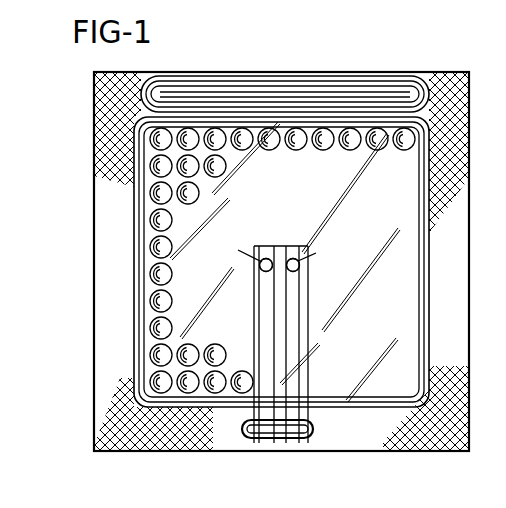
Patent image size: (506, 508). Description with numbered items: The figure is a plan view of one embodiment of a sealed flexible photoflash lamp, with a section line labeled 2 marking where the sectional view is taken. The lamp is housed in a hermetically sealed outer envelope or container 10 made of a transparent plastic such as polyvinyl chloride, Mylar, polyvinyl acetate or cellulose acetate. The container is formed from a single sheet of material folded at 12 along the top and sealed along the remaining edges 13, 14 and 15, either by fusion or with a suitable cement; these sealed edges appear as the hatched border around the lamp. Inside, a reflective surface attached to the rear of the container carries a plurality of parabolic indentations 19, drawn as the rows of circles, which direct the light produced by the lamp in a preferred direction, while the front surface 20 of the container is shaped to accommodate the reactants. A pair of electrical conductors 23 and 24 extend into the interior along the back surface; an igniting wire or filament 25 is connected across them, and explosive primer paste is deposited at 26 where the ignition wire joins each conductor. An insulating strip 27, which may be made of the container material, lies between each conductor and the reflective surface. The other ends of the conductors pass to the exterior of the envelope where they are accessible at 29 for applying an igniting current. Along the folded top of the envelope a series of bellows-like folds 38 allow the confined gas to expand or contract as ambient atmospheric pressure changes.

The section line 2- 2 is at (238, 32).
The outer envelope or container 10 is at (93, 96).
The fold 12 is at (207, 72).
The sealed edge 13 is at (458, 148).
The sealed edge 14 is at (387, 444).
The sealed edge 15 is at (97, 146).
The parabolic indentations 19 is at (228, 172).
The front surface 20 is at (408, 235).
The electrical conductor 23 is at (258, 330).
The electrical conductor 24 is at (302, 333).
The igniting wire or filament 25 is at (279, 258).
The explosive primer paste 26 is at (268, 272).
The insulating strip 27 is at (306, 378).
The exterior conductor ends 29 is at (291, 438).
The folds 38 is at (343, 95).